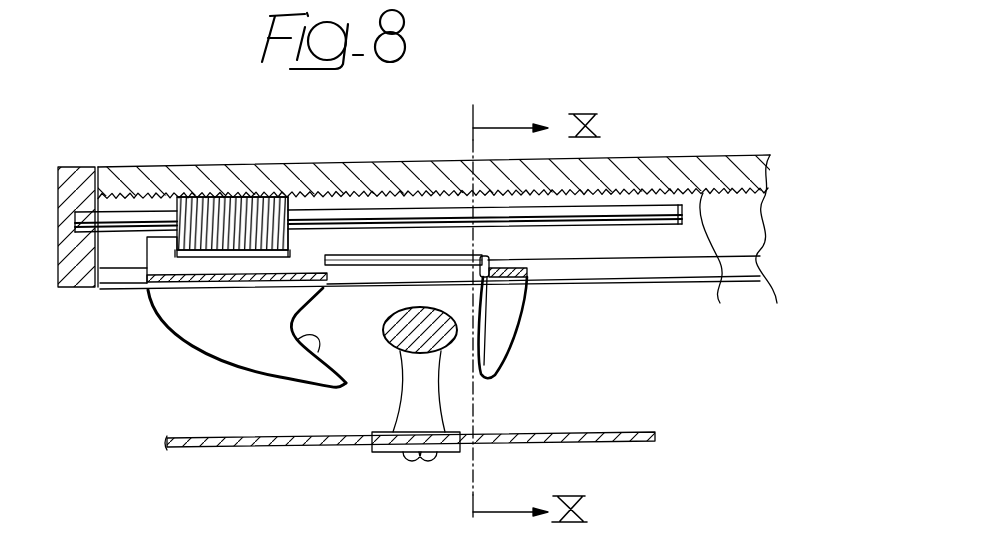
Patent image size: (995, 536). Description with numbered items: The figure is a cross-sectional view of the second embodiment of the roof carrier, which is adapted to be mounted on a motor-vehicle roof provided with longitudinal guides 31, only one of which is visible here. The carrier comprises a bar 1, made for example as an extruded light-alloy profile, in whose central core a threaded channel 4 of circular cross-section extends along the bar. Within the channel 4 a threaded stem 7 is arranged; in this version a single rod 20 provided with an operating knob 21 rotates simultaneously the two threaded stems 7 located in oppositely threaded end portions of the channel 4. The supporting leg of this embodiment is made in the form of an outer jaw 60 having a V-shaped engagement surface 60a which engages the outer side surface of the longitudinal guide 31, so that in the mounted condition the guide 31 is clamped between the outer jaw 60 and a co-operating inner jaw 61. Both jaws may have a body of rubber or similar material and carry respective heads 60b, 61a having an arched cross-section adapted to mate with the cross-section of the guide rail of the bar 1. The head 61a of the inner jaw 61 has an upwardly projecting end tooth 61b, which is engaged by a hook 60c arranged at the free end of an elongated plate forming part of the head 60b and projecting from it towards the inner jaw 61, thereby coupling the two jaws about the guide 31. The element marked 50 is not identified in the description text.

The bar 1 is at (648, 157).
The threaded channel 4 is at (708, 288).
The threaded stem 7 is at (228, 200).
The rod 20 is at (405, 222).
The operating knob 21 is at (75, 266).
The longitudinal guide 31 is at (398, 328).
The spring seat 50 is at (310, 247).
The outer jaw 60 is at (167, 331).
The V-shaped engagement surface 60a is at (293, 378).
The head of outer jaw 60b is at (183, 281).
The hook 60c is at (490, 261).
The inner jaw 61 is at (500, 330).
The head of inner jaw 61a is at (530, 270).
The end tooth 61b is at (482, 278).